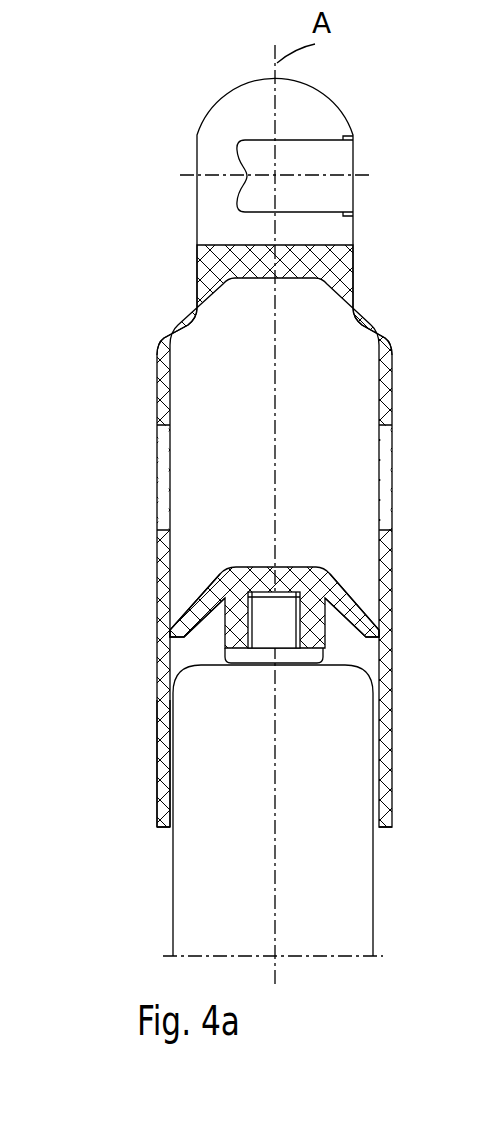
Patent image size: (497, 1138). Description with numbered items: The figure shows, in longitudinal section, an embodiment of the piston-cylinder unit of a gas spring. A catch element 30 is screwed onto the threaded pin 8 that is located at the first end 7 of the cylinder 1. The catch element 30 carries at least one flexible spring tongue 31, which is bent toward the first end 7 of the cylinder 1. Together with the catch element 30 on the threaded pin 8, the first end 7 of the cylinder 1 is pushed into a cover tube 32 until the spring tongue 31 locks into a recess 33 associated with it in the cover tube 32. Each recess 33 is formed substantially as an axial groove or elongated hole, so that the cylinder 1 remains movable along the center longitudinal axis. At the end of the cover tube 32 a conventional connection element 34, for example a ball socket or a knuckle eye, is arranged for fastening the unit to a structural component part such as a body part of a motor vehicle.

The cylinder 1 is at (225, 928).
The first end 7 is at (158, 715).
The threaded pin 8 is at (265, 638).
The catch element 30 is at (228, 568).
The spring tongue 31 is at (178, 634).
The cover tube 32 is at (167, 330).
The recess 33 is at (163, 450).
The connection element 34 is at (250, 228).